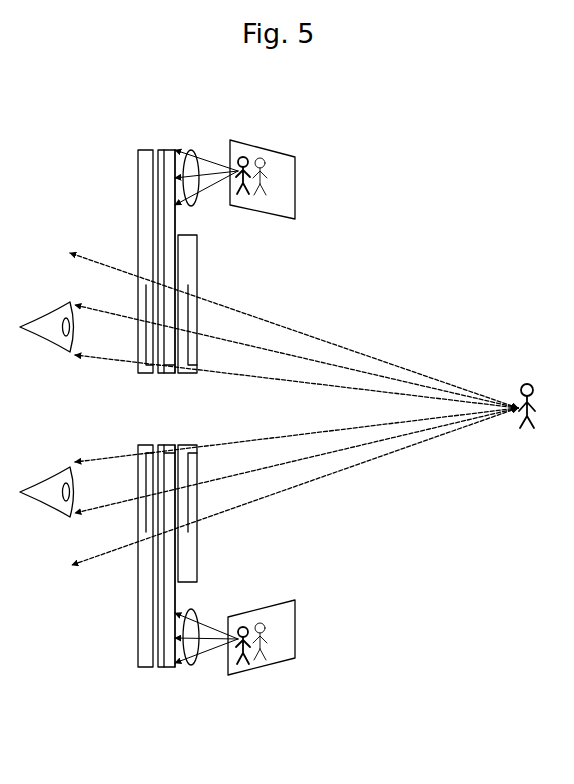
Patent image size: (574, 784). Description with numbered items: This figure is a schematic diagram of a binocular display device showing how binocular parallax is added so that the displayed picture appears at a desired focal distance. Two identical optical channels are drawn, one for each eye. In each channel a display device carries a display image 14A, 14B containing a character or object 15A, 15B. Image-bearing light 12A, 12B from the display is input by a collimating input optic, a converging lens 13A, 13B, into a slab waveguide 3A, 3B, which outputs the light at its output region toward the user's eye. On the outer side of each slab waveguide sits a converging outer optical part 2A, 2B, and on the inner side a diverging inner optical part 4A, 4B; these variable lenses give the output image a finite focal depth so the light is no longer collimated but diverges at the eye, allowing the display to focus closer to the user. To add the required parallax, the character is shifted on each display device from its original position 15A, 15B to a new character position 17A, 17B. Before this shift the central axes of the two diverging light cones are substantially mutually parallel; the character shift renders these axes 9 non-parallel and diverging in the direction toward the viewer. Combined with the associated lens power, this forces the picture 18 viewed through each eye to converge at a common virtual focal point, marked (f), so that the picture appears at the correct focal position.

The converging outer optical part 2A is at (198, 268).
The converging outer optical part 2B is at (198, 556).
The slab waveguide 3A is at (161, 150).
The slab waveguide 3B is at (167, 668).
The diverging inner optical part 4A is at (138, 157).
The diverging inner optical part 4B is at (138, 647).
The axes of light cones 9 is at (89, 248).
The image-bearing light 12A is at (182, 146).
The image-bearing light 12B is at (184, 675).
The converging lens 13A is at (196, 165).
The converging lens 13B is at (198, 654).
The display image 14A is at (296, 183).
The display image 14B is at (296, 634).
The character 15A is at (262, 197).
The character 15B is at (262, 626).
The new character position 17A is at (245, 156).
The new character position 17B is at (244, 667).
The picture 18 is at (527, 383).